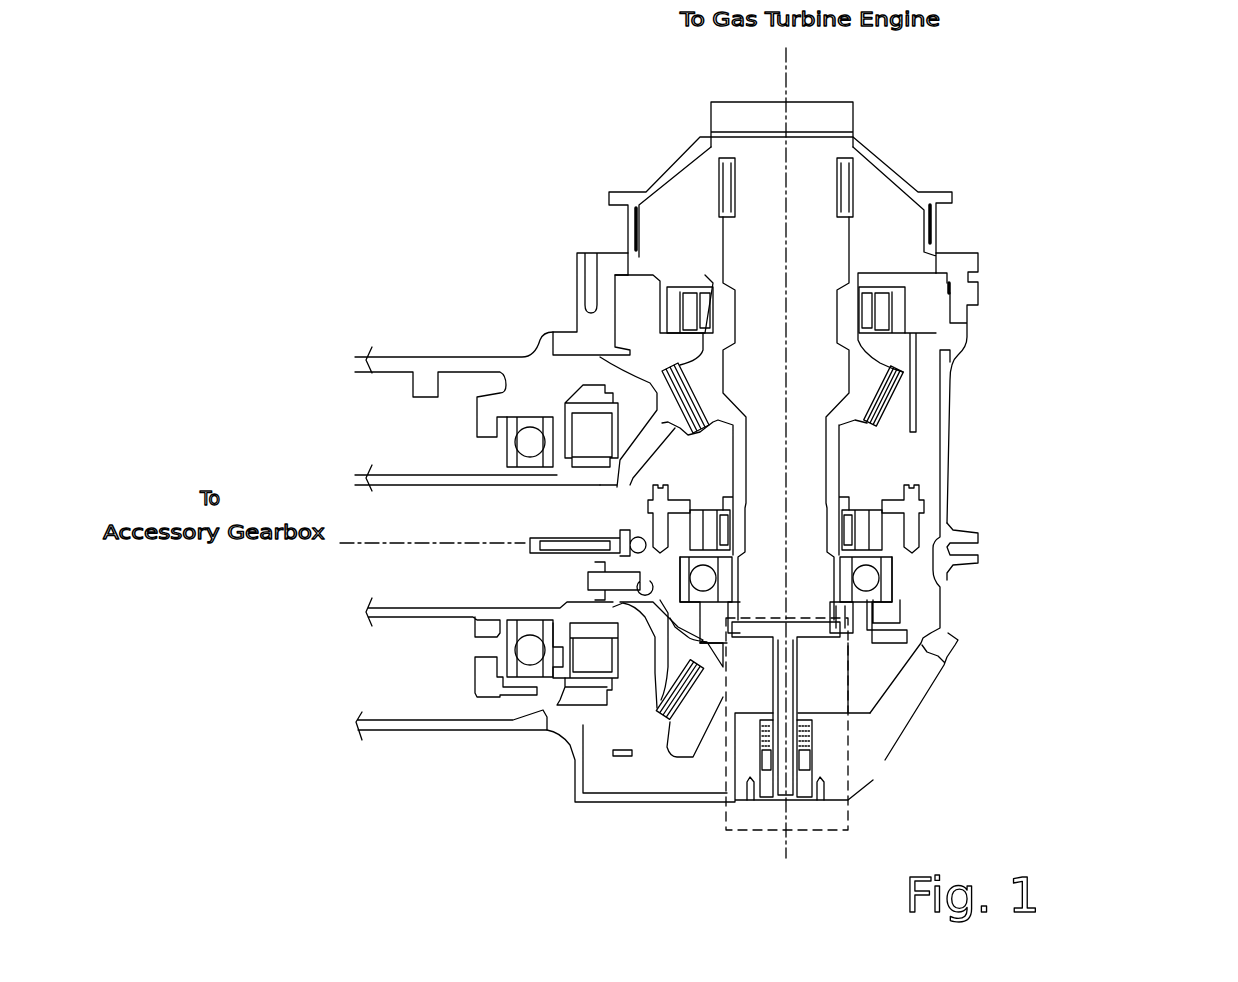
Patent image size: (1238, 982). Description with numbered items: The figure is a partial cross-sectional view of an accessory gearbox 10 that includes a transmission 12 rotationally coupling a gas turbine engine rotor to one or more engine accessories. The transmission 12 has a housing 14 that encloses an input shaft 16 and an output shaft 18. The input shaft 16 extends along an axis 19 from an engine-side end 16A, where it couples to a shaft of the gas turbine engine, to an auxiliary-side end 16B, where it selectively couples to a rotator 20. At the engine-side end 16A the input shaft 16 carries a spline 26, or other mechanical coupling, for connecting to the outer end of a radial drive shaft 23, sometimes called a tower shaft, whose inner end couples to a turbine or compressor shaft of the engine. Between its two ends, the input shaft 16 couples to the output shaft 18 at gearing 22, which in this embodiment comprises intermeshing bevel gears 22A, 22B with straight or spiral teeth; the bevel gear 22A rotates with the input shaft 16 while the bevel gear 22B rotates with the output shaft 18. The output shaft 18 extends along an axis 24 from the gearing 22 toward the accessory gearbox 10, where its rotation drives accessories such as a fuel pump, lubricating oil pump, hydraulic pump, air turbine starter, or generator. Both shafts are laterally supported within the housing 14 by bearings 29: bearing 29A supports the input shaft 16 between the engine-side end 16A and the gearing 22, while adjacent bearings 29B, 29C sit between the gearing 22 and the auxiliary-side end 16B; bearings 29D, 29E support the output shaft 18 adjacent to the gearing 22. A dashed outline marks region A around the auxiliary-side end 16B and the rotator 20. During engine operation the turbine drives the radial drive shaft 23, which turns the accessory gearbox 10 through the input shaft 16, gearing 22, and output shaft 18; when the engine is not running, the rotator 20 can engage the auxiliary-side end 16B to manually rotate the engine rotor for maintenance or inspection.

The accessory gearbox 10 is at (431, 530).
The transmission 12 is at (1112, 135).
The housing 14 is at (817, 527).
The input shaft 16 is at (882, 404).
The engine-side end 16A is at (836, 158).
The auxiliary-side end 16B is at (817, 640).
The output shaft 18 is at (421, 466).
The axis 19 is at (790, 215).
The rotator 20 is at (829, 765).
The gearing 22 is at (593, 303).
The bevel gear 22A is at (650, 358).
The bevel gear 22B is at (653, 383).
The radial drive shaft 23 is at (710, 120).
The axis 24 is at (472, 543).
The spline 26 is at (850, 178).
The bearings 29 is at (970, 584).
The bearing 29A is at (908, 308).
The bearing 29B is at (887, 523).
The bearing 29C is at (885, 587).
The bearing 29D is at (523, 677).
The bearing 29E is at (587, 690).
The detail region A is at (848, 672).